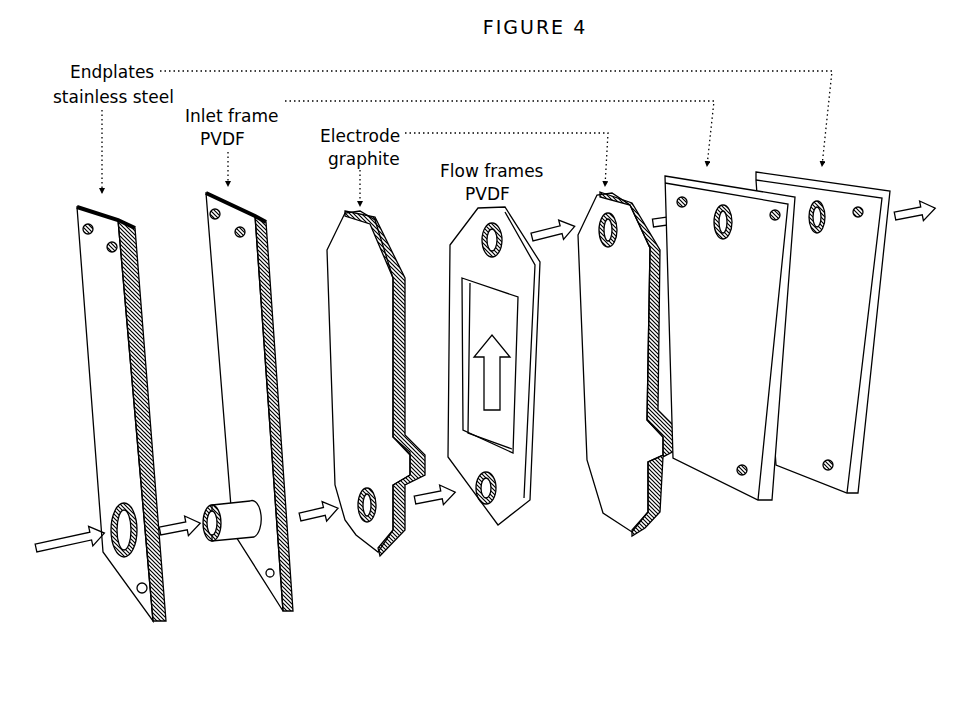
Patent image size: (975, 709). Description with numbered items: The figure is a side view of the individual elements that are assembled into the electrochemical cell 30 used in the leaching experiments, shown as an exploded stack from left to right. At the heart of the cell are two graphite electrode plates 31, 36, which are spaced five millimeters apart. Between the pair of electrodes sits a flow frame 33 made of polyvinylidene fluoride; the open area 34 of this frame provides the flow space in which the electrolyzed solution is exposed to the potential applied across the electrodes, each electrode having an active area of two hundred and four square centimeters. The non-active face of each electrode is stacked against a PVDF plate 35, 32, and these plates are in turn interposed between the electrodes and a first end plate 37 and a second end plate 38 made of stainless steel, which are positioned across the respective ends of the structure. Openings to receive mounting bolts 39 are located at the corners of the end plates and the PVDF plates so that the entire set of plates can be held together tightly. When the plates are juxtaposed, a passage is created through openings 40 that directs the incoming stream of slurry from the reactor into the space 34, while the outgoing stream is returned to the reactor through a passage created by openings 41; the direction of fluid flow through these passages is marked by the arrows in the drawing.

The electrochemical cell 30 is at (476, 374).
The graphite electrode plate 31 is at (389, 557).
The PVDF plate 32 is at (749, 504).
The flow frame 33 is at (504, 417).
The open area 34 is at (506, 418).
The PVDF plate 35 is at (278, 622).
The graphite electrode plate 36 is at (641, 544).
The first end plate 37 is at (125, 440).
The second end plate 38 is at (834, 499).
The openings to receive mounting bolts 39 is at (108, 246).
The openings 40 is at (216, 498).
The openings 41 is at (613, 203).